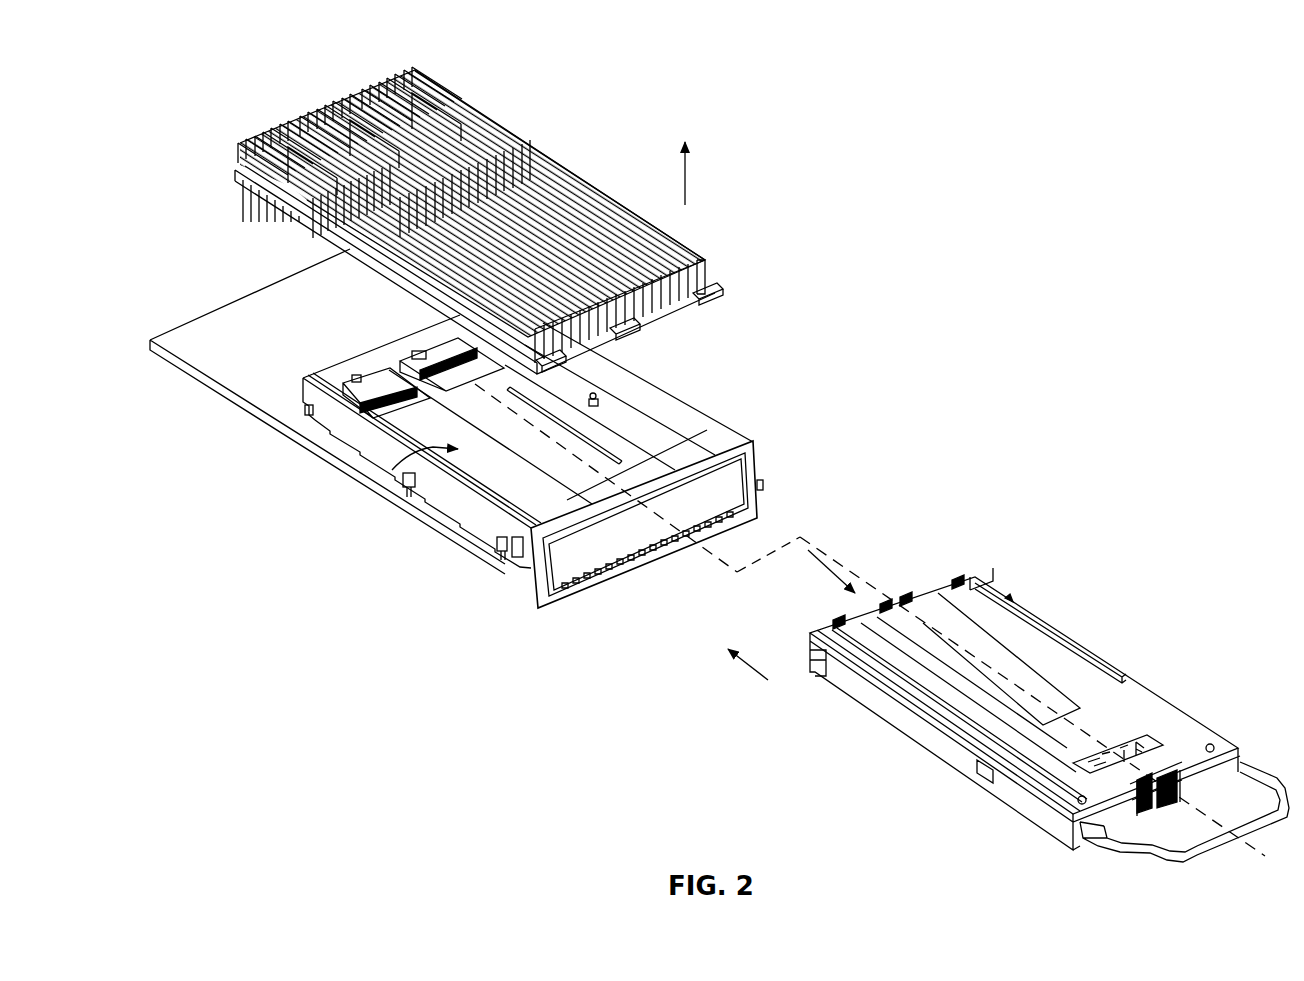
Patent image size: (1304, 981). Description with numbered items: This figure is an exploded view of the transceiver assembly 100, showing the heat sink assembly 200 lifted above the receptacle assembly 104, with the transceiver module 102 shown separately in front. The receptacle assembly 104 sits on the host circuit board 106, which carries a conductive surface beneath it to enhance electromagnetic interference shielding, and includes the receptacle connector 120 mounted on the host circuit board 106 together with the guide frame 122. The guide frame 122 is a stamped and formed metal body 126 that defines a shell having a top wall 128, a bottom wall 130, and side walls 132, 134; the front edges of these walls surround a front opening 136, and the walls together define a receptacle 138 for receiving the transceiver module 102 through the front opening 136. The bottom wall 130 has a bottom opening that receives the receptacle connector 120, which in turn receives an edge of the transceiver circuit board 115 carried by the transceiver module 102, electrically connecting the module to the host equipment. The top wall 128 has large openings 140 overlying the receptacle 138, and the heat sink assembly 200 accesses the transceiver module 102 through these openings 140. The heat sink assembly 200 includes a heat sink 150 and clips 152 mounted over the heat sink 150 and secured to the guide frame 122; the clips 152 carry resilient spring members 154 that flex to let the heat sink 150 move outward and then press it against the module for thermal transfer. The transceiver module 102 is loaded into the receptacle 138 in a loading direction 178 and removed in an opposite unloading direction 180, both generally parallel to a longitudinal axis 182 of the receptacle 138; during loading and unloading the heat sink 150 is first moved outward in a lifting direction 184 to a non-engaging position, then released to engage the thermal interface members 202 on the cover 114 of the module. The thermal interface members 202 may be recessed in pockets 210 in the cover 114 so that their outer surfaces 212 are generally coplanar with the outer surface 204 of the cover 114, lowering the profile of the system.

The transceiver assembly 100 is at (937, 273).
The transceiver module 102 is at (1137, 534).
The receptacle assembly 104 is at (733, 201).
The host circuit board 106 is at (228, 372).
The cover 114 is at (1158, 716).
The transceiver circuit board 115 is at (818, 663).
The receptacle connector 120 is at (370, 395).
The guide frame 122 is at (437, 493).
The metal body 126 is at (653, 402).
The top wall 128 is at (333, 372).
The bottom wall 130 is at (758, 486).
The side wall 132 is at (477, 528).
The side wall 134 is at (668, 431).
The front opening 136 is at (643, 522).
The receptacle 138 is at (392, 475).
The openings 140 is at (619, 393).
The heat sink 150 is at (566, 166).
The clips 152 is at (716, 288).
The spring members 154 is at (702, 269).
The loading direction 178 is at (738, 683).
The unloading direction 180 is at (833, 553).
The longitudinal axis 182 is at (718, 562).
The lifting direction 184 is at (685, 172).
The heat sink assembly 200 is at (547, 133).
The thermal interface members 202 is at (1047, 642).
The outer surface 204 is at (1074, 688).
The pockets 210 is at (1016, 594).
The outer surfaces 212 is at (984, 607).